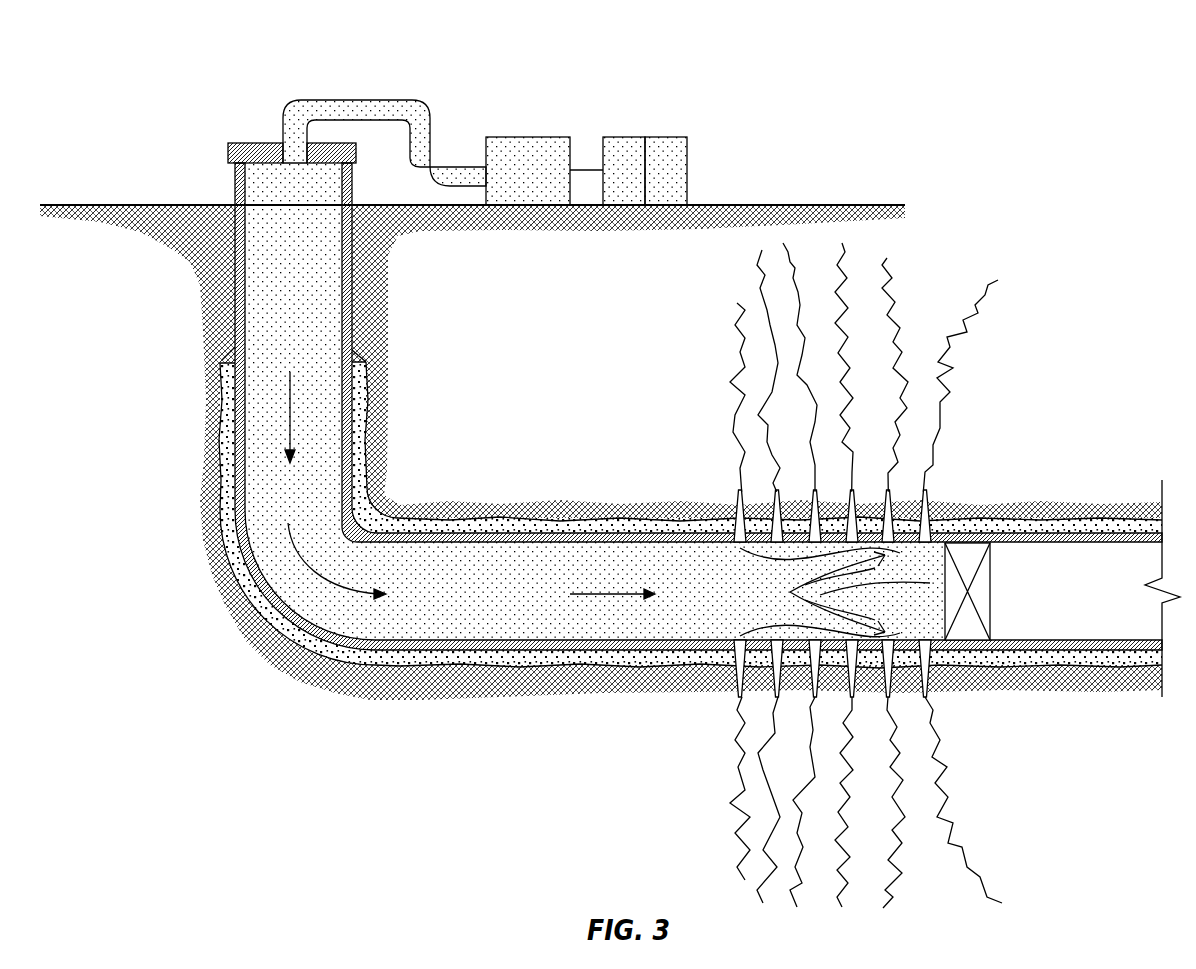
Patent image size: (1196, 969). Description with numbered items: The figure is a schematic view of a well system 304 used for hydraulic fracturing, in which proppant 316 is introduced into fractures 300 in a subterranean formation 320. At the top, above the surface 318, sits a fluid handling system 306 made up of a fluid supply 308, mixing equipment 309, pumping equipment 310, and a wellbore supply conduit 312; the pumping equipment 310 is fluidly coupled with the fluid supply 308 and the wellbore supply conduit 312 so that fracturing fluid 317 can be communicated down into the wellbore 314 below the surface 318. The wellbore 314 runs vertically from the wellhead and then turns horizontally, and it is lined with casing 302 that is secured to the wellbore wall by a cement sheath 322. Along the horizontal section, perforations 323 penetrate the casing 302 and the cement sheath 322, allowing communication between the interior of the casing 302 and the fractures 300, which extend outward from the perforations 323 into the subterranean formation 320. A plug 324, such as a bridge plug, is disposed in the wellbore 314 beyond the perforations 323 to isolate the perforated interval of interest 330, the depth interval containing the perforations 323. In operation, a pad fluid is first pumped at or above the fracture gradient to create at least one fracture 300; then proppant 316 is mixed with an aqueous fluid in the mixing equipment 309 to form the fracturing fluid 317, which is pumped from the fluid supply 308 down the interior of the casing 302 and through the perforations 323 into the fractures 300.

The fractures 300 is at (737, 303).
The casing 302 is at (510, 535).
The well system 304 is at (144, 60).
The fluid handling system 306 is at (626, 117).
The fluid supply 308 is at (665, 137).
The mixing equipment 309 is at (615, 137).
The pumping equipment 310 is at (530, 137).
The wellbore supply conduit 312 is at (355, 100).
The wellbore 314 is at (368, 385).
The proppant 316 is at (403, 572).
The fracturing fluid 317 is at (250, 400).
The surface 318 is at (795, 205).
The subterranean formation 320 is at (442, 285).
The cement sheath 322 is at (593, 522).
The perforations 323 is at (815, 490).
The plug 324 is at (970, 548).
The perforated interval of interest 330 is at (792, 592).